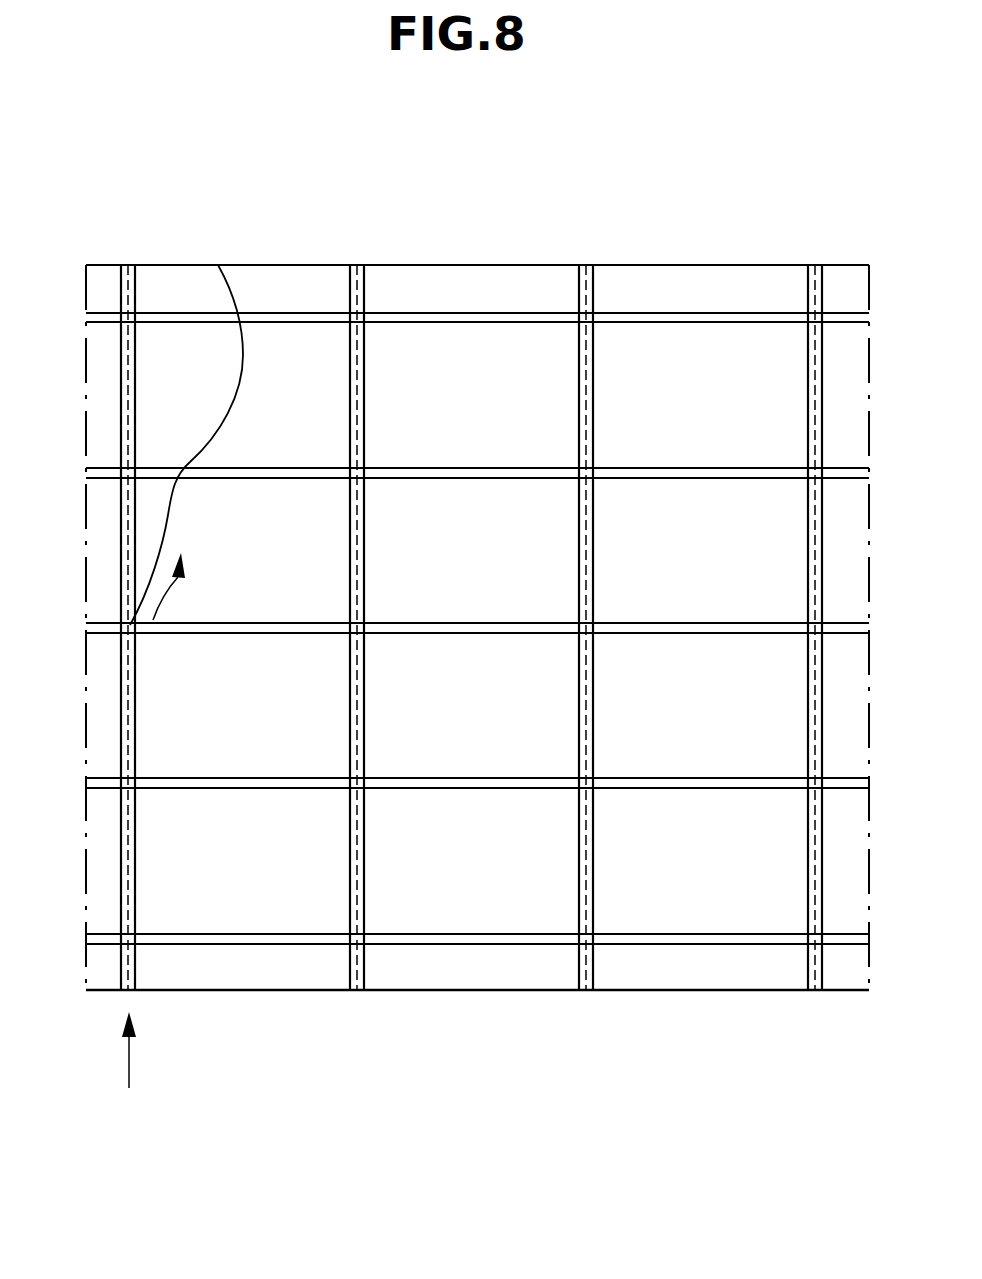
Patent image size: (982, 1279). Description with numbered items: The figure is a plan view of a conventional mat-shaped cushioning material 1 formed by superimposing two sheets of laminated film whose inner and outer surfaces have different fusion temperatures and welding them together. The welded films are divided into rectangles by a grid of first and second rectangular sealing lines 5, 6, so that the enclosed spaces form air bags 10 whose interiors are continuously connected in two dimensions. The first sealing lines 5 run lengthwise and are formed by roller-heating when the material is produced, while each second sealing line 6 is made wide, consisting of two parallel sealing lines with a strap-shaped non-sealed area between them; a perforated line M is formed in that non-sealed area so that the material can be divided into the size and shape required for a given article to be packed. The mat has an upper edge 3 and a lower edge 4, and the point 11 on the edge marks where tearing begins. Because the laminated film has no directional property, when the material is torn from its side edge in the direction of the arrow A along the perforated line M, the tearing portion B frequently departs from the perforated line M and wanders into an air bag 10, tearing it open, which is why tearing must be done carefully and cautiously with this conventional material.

The substrate (glass panel) 1 is at (725, 283).
The upper edge region of the substrate 3 is at (440, 283).
The lower edge region of the substrate 4 is at (469, 968).
The first rectangular sealing line 5 is at (252, 785).
The second rectangular sealing line 6 is at (137, 395).
The air bag 10 is at (242, 869).
The starting point of crack on the edge 11 is at (512, 262).
The perforated line M is at (128, 545).
The tearing portion B is at (170, 513).
The arrow A is at (128, 1065).